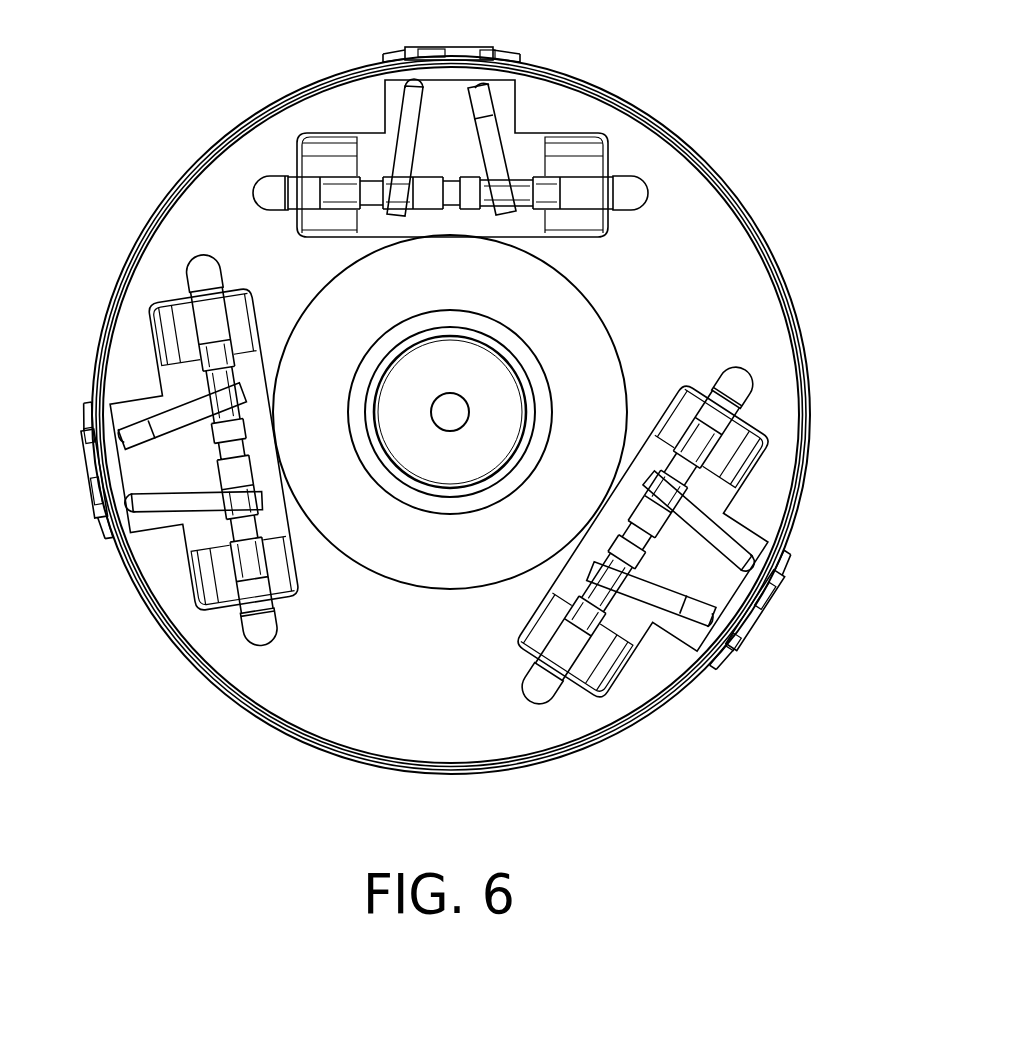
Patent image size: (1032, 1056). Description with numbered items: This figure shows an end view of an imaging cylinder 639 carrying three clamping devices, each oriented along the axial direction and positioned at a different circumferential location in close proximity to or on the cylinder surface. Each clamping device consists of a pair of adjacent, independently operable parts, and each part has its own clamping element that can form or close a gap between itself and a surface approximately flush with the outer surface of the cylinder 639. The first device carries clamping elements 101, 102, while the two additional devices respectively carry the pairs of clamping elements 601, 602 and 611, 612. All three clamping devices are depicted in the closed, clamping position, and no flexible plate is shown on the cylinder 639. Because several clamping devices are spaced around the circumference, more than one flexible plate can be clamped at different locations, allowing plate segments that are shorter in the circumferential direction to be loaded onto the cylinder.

The clamping element 101 is at (498, 47).
The clamping element 102 is at (403, 47).
The imaging cylinder 639 is at (648, 110).
The clamping element 611 is at (85, 426).
The clamping element 612 is at (102, 520).
The clamping element 601 is at (722, 653).
The clamping element 602 is at (780, 582).